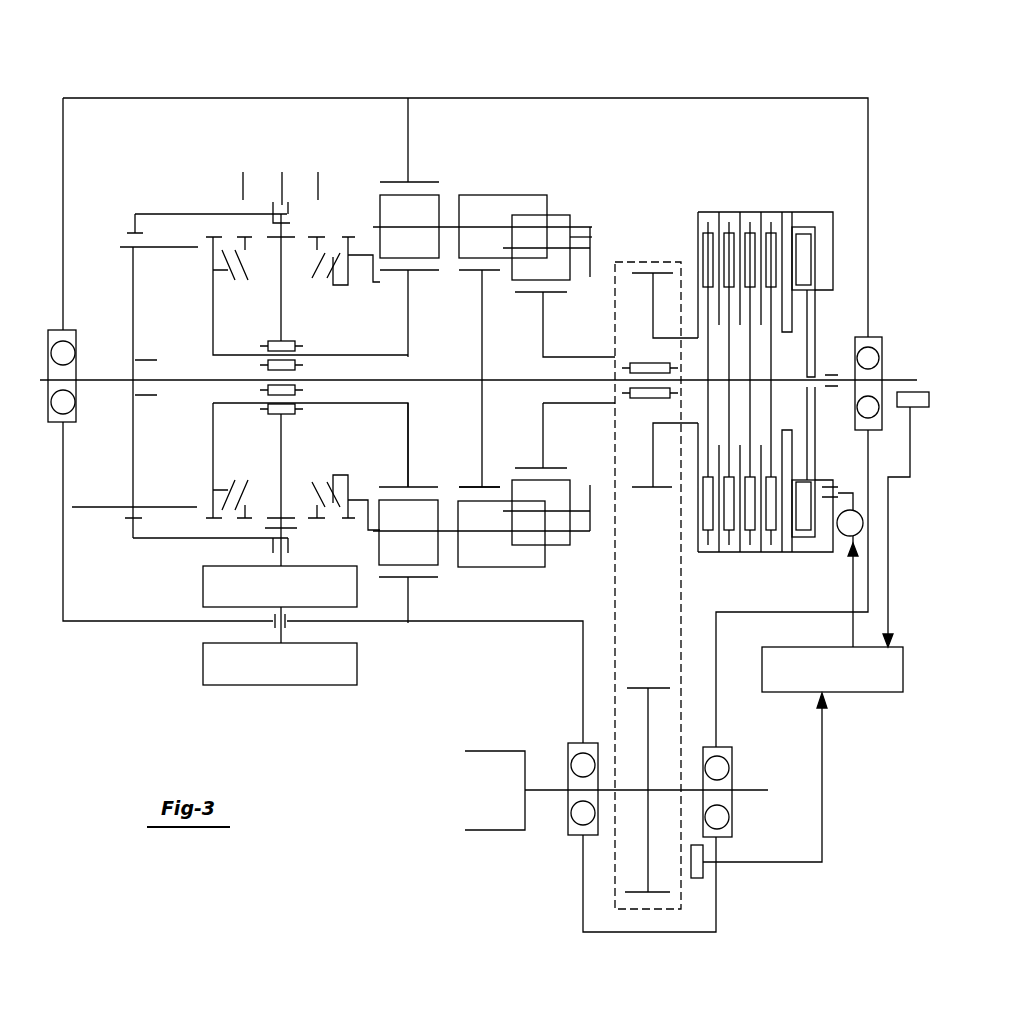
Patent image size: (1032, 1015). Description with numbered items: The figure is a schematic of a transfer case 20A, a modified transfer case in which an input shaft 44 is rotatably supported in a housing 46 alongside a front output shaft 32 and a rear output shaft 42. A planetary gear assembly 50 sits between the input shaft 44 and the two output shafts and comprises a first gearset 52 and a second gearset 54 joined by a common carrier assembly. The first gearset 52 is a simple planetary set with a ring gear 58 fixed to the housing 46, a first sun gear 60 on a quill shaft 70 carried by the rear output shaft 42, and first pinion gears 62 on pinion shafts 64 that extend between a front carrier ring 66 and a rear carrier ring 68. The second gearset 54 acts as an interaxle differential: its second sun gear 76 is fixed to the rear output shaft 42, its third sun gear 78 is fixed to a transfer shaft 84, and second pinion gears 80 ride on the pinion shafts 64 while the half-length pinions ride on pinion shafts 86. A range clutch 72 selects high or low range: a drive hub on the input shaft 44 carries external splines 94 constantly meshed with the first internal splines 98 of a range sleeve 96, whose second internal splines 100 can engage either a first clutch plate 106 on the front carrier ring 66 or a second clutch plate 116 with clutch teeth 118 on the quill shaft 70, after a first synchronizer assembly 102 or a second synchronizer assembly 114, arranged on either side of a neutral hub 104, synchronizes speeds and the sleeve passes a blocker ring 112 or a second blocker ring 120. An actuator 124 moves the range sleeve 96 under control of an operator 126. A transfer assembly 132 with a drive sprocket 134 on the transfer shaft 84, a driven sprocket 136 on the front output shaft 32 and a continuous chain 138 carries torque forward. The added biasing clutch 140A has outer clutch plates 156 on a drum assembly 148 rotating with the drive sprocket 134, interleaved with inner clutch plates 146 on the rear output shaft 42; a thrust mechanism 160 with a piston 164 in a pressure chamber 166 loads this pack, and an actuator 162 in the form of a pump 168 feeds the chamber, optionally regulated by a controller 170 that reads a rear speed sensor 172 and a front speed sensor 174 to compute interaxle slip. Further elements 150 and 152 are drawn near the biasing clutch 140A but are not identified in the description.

The transfer case 20A is at (722, 92).
The front output shaft 32 is at (548, 790).
The rear output shaft 42 is at (858, 335).
The input shaft 44 is at (48, 352).
The housing 46 is at (832, 100).
The planetary gear assembly 50 is at (537, 176).
The first gearset 52 is at (452, 178).
The second gearset 54 is at (554, 189).
The ring gear 58 is at (420, 182).
The first sun gear 60 is at (410, 452).
The first pinion gears 62 is at (385, 207).
The pinion shaft 64 is at (450, 228).
The front carrier ring 66 is at (380, 225).
The rear carrier ring 68 is at (595, 235).
The quill shaft 70 is at (335, 435).
The range clutch 72 is at (155, 192).
The second sun gear 76 is at (482, 360).
The third sun gear 78 is at (543, 332).
The second pinion gears 80 is at (480, 200).
The transfer shaft 84 is at (567, 405).
The pinion shaft 86 is at (590, 262).
The external splines 94 is at (125, 247).
The range sleeve 96 is at (213, 214).
The first set of internal splines 98 is at (128, 518).
The second set of internal splines 100 is at (292, 230).
The first synchronizer assembly 102 is at (303, 460).
The neutral hub 104 is at (283, 333).
The first clutch plate 106 is at (350, 482).
The blocker ring 112 is at (300, 252).
The second synchronizer assembly 114 is at (262, 458).
The second clutch plate 116 is at (213, 345).
The external clutch teeth 118 is at (208, 519).
The second blocker ring 120 is at (250, 250).
The actuator 124 is at (358, 605).
The operator 126 is at (337, 685).
The transfer assembly 132 is at (690, 635).
The drive sprocket 134 is at (650, 295).
The driven sprocket 136 is at (648, 713).
The continuous chain 138 is at (614, 575).
The biasing clutch 140A is at (792, 197).
The inner clutch plates 146 is at (775, 378).
The drum assembly 148 is at (752, 197).
The clutch drum 150 is at (698, 235).
The piston housing 152 is at (835, 290).
The outer clutch plates 156 is at (698, 225).
The thrust mechanism 160 is at (829, 240).
The actuator 162 is at (836, 551).
The piston 164 is at (820, 285).
The pressure chamber 166 is at (823, 212).
The pump 168 is at (855, 510).
The controller 170 is at (890, 692).
The rear speed sensor 172 is at (922, 392).
The front speed sensor 174 is at (703, 868).